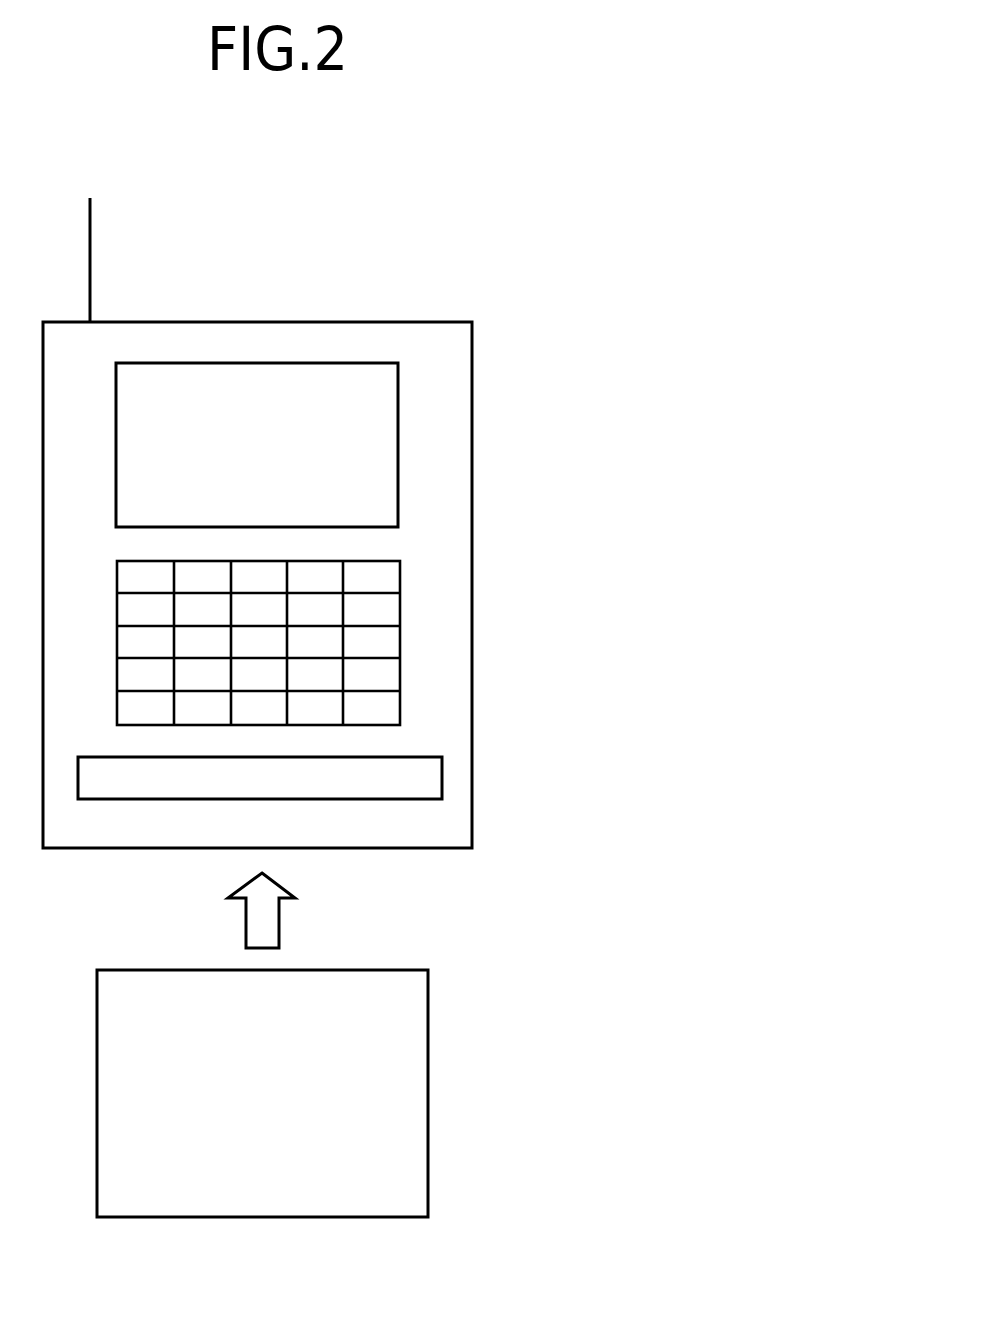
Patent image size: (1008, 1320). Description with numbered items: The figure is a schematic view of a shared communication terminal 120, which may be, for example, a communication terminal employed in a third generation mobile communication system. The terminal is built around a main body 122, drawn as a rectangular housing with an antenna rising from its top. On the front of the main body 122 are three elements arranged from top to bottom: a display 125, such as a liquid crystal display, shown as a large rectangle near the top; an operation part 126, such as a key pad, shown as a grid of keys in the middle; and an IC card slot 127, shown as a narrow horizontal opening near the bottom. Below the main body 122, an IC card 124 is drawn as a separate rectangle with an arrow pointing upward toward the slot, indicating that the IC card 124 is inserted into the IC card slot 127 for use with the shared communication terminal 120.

The shared communication terminal 120 is at (443, 222).
The main body 122 is at (472, 388).
The display 125 is at (398, 508).
The operation part 126 is at (400, 637).
The IC card slot 127 is at (442, 775).
The IC card 124 is at (428, 1030).